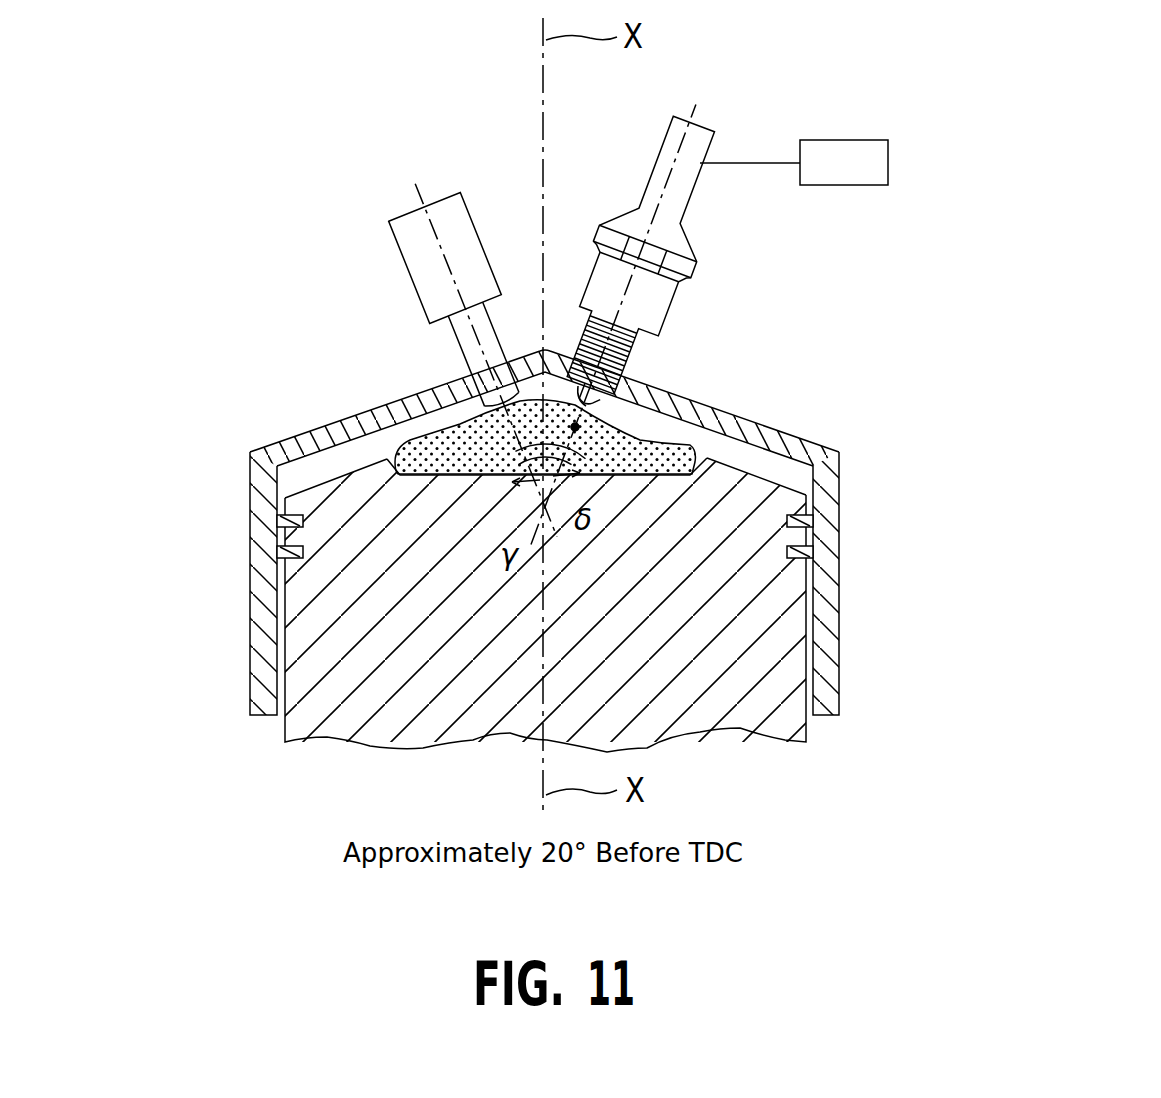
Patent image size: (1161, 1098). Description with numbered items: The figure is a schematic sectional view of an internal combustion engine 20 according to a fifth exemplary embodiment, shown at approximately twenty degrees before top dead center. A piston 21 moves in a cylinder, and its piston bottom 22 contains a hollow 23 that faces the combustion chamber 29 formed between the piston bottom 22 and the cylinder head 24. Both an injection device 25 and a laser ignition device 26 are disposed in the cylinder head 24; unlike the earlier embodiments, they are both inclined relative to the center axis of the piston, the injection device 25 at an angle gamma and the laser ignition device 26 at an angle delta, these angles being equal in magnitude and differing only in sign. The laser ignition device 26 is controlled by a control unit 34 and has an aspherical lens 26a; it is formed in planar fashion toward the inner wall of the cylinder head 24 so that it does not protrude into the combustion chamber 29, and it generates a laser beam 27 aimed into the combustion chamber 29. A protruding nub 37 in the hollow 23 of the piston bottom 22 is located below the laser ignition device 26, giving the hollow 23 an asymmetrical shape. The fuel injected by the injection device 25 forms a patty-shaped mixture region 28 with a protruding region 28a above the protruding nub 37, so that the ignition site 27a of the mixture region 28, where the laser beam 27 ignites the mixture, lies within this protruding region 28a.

The internal combustion engine 20 is at (192, 396).
The piston 21 is at (767, 610).
The piston bottom 22 is at (790, 495).
The hollow 23 is at (650, 477).
The cylinder head 24 is at (350, 418).
The injection device 25 is at (399, 248).
The laser ignition device 26 is at (673, 127).
The aspherical lens 26a is at (612, 373).
The laser beam 27 is at (665, 395).
The ignition site 27a is at (660, 420).
The mixture region 28 is at (433, 407).
The protruding region 28a is at (553, 363).
The combustion chamber 29 is at (790, 430).
The control unit 34 is at (843, 150).
The protruding nub 37 is at (718, 436).